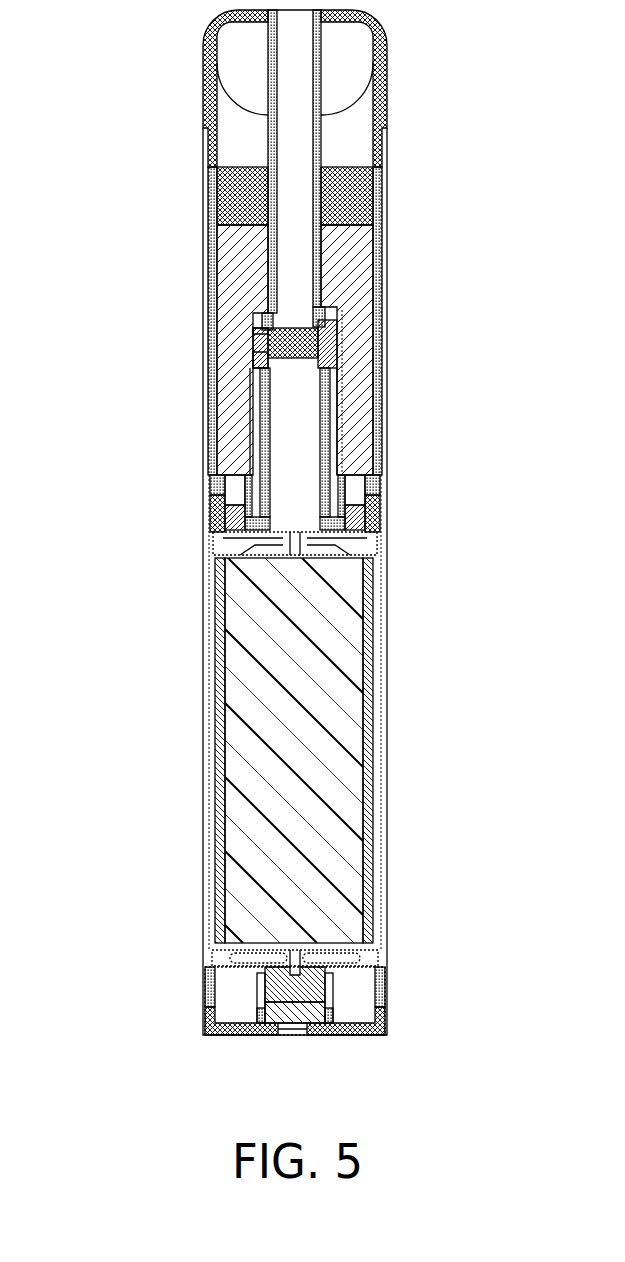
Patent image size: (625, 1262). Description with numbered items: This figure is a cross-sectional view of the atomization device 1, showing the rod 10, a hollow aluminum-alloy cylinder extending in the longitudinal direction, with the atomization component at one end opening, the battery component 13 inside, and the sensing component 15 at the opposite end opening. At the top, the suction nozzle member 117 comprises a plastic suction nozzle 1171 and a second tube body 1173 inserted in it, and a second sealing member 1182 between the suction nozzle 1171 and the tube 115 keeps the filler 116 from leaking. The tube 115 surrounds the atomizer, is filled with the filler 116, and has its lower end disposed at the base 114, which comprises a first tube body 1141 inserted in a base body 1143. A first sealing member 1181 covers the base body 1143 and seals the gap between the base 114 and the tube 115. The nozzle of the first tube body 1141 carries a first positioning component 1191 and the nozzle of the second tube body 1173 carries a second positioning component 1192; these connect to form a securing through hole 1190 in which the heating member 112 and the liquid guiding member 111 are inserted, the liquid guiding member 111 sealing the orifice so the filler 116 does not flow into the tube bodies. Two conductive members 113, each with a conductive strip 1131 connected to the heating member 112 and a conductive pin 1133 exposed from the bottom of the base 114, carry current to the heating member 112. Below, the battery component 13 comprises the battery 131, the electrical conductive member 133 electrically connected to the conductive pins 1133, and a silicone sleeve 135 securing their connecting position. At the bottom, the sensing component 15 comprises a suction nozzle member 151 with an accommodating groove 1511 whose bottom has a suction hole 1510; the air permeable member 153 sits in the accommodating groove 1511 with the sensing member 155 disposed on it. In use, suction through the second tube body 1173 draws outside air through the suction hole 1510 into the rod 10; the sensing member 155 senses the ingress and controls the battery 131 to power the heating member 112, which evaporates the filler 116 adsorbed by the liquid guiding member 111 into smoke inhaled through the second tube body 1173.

The atomization device 1 is at (45, 106).
The rod 10 is at (205, 413).
The liquid guiding member 111 is at (337, 322).
The heating member 112 is at (245, 343).
The conductive member 113 is at (455, 462).
The base 114 is at (137, 500).
The tube 115 is at (384, 244).
The filler 116 is at (244, 261).
The suction nozzle member 117 is at (468, 88).
The suction nozzle 1171 is at (387, 83).
The second tube body 1173 is at (321, 148).
The first sealing member 1181 is at (235, 530).
The second sealing member 1182 is at (233, 188).
The securing through hole 1190 is at (256, 337).
The first positioning component 1191 is at (256, 358).
The second positioning component 1192 is at (263, 324).
The conductive strip 1131 is at (327, 462).
The conductive pin 1133 is at (352, 514).
The first tube body 1141 is at (265, 457).
The base body 1143 is at (215, 505).
The battery component 13 is at (448, 575).
The battery 131 is at (340, 658).
The electrical conductive member 133 is at (300, 548).
The sleeve 135 is at (372, 613).
The sensing component 15 is at (455, 965).
The suction nozzle member 151 is at (383, 1030).
The suction hole 1510 is at (305, 1032).
The accommodating groove 1511 is at (262, 992).
The air permeable member 153 is at (312, 1008).
The sensing member 155 is at (310, 980).